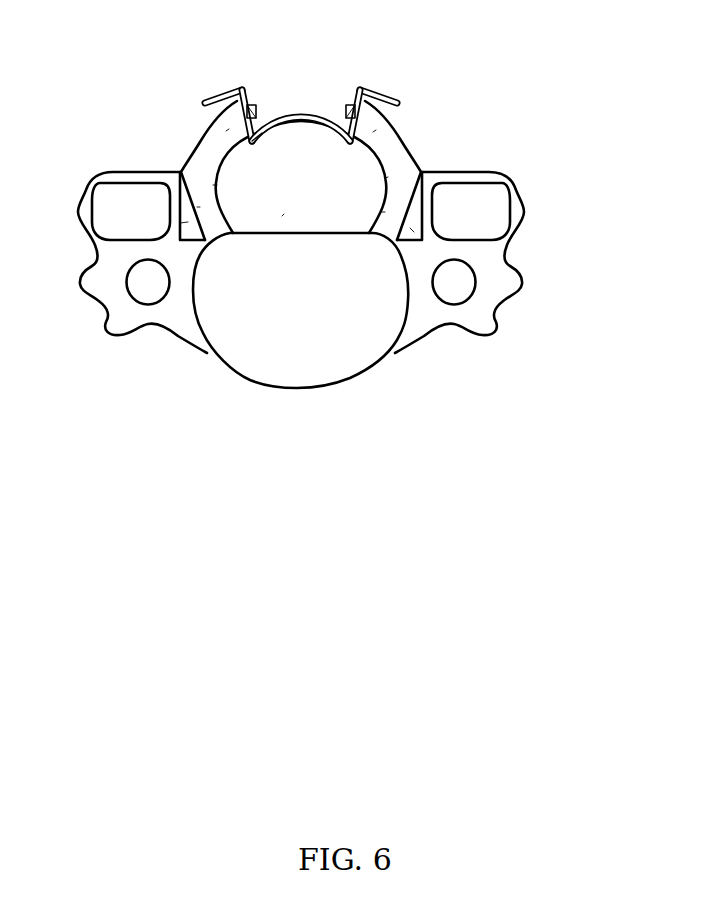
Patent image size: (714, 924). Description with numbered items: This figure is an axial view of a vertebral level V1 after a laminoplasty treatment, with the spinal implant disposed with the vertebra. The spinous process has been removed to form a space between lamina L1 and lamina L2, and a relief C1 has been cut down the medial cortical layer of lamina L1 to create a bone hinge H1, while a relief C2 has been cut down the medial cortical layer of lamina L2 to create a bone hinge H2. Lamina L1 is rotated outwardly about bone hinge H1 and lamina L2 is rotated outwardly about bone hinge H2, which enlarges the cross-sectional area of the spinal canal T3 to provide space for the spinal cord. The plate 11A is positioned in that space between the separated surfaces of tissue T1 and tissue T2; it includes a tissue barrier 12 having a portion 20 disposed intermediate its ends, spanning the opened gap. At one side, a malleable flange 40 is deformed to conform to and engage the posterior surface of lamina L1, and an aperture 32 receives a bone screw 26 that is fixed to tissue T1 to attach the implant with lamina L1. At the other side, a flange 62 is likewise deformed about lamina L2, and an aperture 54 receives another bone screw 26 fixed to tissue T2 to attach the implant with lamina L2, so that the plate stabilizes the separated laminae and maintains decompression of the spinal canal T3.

The plate 11A is at (293, 84).
The flange 40 is at (208, 100).
The flange 62 is at (393, 98).
The aperture 32 is at (253, 116).
The aperture 54 is at (350, 114).
The portion 20 is at (301, 116).
The bone screw 26 is at (257, 104).
The tissue barrier 12 is at (282, 128).
The tissue T1 is at (227, 133).
The tissue T2 is at (375, 131).
The bone hinge H1 is at (213, 185).
The bone hinge H2 is at (385, 212).
The lamina L1 is at (197, 207).
The lamina L2 is at (388, 177).
The relief C1 is at (188, 222).
The relief C2 is at (410, 228).
The spinal canal T3 is at (284, 214).
The vertebral level V1 is at (545, 260).